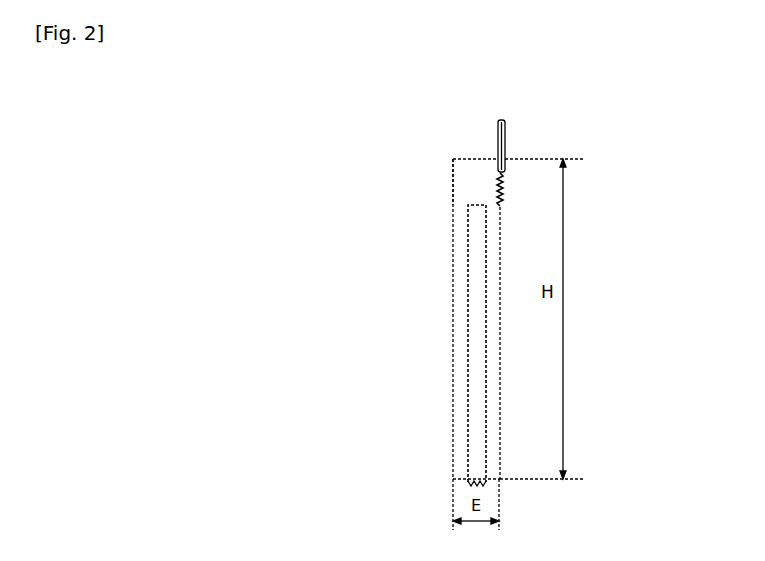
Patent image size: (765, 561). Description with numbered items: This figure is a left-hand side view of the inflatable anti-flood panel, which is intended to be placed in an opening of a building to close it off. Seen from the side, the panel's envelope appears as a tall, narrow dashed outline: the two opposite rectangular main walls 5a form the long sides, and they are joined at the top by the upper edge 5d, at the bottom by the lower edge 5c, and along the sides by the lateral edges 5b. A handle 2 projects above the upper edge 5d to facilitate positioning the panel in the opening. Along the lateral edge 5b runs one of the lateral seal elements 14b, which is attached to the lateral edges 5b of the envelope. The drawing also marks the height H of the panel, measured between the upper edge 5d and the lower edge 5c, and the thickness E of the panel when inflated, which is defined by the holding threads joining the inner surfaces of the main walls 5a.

The handle 2 is at (507, 137).
The main walls 5a is at (453, 308).
The lateral edges 5b is at (472, 186).
The lower edge 5c is at (488, 480).
The upper edge 5d is at (467, 159).
The lateral seal elements 14b is at (478, 362).